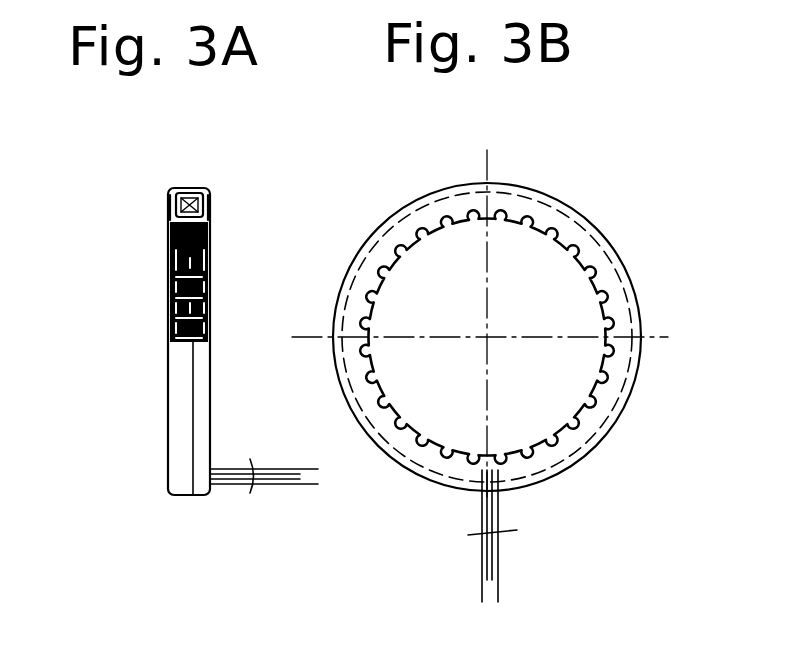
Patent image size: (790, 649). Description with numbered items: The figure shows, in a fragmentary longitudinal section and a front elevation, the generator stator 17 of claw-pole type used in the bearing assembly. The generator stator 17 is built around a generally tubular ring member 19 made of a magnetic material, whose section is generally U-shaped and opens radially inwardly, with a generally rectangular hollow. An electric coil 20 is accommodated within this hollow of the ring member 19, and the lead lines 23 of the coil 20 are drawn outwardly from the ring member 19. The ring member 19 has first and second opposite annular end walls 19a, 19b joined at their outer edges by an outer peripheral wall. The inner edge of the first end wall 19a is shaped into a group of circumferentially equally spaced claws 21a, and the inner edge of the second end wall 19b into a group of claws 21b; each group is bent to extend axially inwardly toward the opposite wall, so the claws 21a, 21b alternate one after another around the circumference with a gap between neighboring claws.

In FIG. 3A, the generator stator 17 is at (193, 336).
In FIG. 3B, the generator stator 17 is at (520, 365).
In FIG. 3A, the ring member 19 is at (198, 445).
In FIG. 3B, the ring member 19 is at (522, 185).
In FIG. 3A, the first annular end wall 19a is at (170, 204).
In FIG. 3A, the second annular end wall 19b is at (212, 208).
In FIG. 3B, the second annular end wall 19b is at (560, 219).
In FIG. 3A, the electric coil 20 is at (190, 193).
In FIG. 3A, the claws 21a is at (170, 303).
In FIG. 3B, the claws 21a is at (628, 302).
In FIG. 3A, the claws 21b is at (129, 273).
In FIG. 3B, the claws 21b is at (554, 359).
In FIG. 3A, the lead lines 23 is at (283, 485).
In FIG. 3B, the lead lines 23 is at (497, 565).